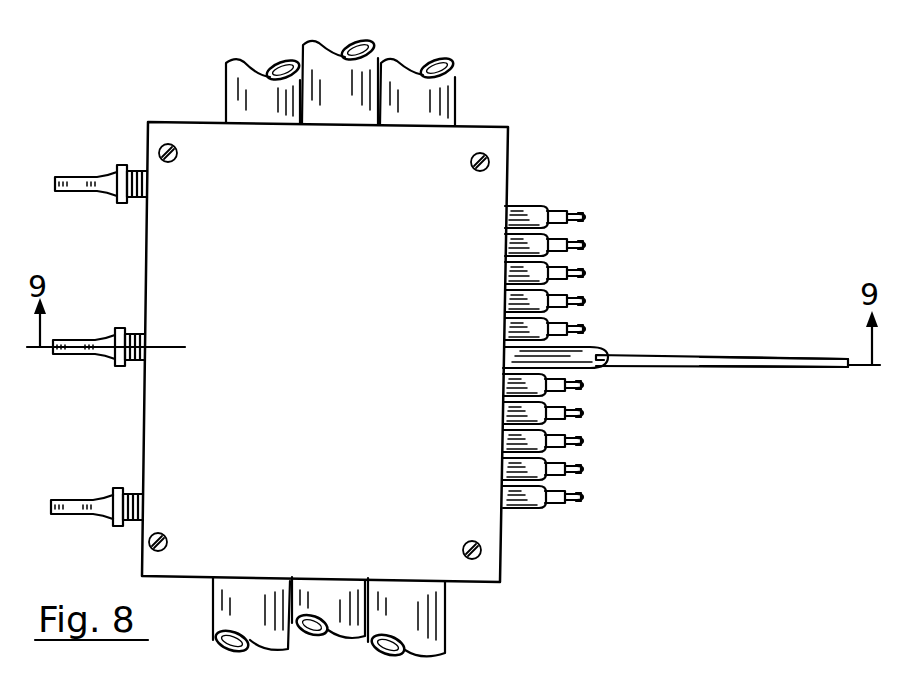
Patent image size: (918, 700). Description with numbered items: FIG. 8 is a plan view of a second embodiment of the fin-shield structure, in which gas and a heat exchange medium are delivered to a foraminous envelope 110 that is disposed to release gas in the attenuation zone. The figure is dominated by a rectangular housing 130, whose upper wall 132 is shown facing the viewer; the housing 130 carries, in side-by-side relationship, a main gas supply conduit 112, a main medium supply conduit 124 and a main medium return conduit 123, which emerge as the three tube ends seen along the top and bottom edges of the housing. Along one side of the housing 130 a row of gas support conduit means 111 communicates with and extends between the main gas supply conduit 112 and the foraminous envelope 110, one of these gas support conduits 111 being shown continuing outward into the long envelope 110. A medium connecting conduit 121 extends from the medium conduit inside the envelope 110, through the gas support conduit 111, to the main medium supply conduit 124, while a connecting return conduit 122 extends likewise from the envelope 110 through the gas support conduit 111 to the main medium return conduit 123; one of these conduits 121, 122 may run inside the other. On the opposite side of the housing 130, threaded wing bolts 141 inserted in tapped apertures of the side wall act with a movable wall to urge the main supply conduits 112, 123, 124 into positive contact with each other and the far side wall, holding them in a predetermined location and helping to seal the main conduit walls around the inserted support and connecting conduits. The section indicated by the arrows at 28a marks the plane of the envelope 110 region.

The housing 130 is at (514, 119).
The upper wall 132 is at (205, 150).
The main medium supply conduit 124 is at (250, 66).
The main medium return conduit 123 is at (316, 42).
The main gas supply conduit 112 is at (402, 60).
The threaded wing bolt 141 is at (125, 166).
The gas support conduit means 111 is at (533, 205).
The connecting return conduit 122 is at (565, 208).
The medium connecting conduit means 121 is at (584, 214).
The probe 28a is at (688, 346).
The foraminous envelope 110 is at (740, 357).